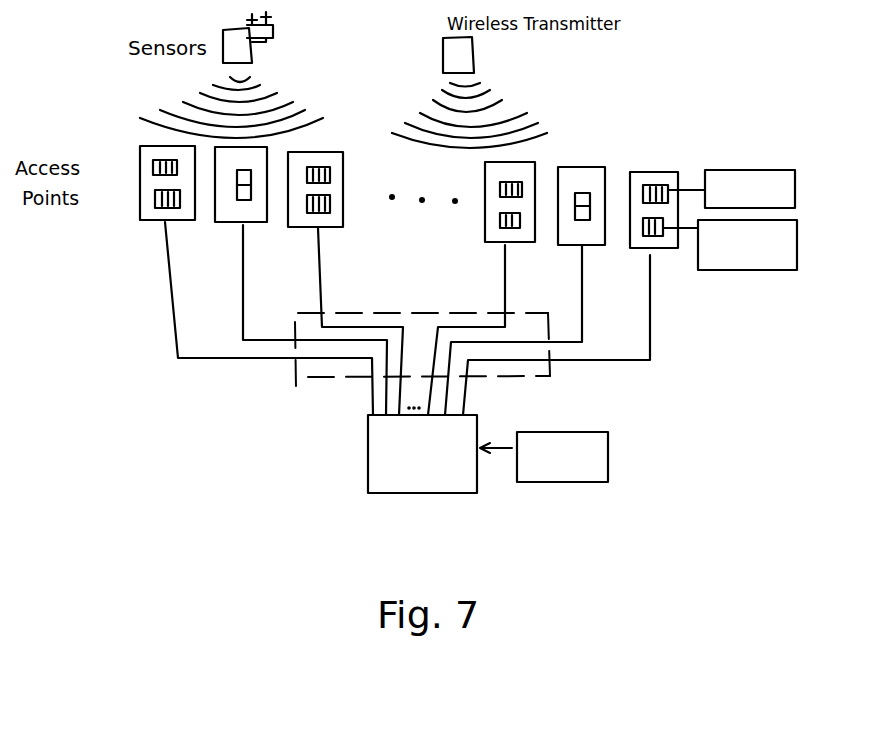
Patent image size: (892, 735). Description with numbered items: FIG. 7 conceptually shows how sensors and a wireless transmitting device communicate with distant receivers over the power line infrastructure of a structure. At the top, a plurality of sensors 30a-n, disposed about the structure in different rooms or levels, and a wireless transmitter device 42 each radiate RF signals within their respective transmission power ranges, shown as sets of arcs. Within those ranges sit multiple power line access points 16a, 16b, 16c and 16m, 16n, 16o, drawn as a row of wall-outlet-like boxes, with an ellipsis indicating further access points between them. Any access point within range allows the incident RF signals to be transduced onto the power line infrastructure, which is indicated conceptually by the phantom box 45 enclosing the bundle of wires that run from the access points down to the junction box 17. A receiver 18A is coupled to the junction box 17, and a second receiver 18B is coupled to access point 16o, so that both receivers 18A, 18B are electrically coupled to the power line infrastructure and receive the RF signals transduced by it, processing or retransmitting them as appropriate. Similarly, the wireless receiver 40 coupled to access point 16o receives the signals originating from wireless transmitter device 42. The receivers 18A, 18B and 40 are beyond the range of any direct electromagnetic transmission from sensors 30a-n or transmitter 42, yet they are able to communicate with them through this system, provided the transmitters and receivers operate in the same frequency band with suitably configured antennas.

The sensors 30a-n is at (255, 45).
The wireless transmitter device 42 is at (478, 53).
The access point 16a is at (145, 215).
The access point 16b is at (217, 222).
The access point 16c is at (343, 225).
The access point 16m is at (528, 165).
The access point 16n is at (593, 170).
The access point 16o is at (678, 175).
The wireless receiver 40 is at (778, 182).
The receiver 18B is at (722, 262).
The power line infrastructure 45 is at (618, 382).
The junction box 17 is at (382, 485).
The receiver 18A is at (525, 475).